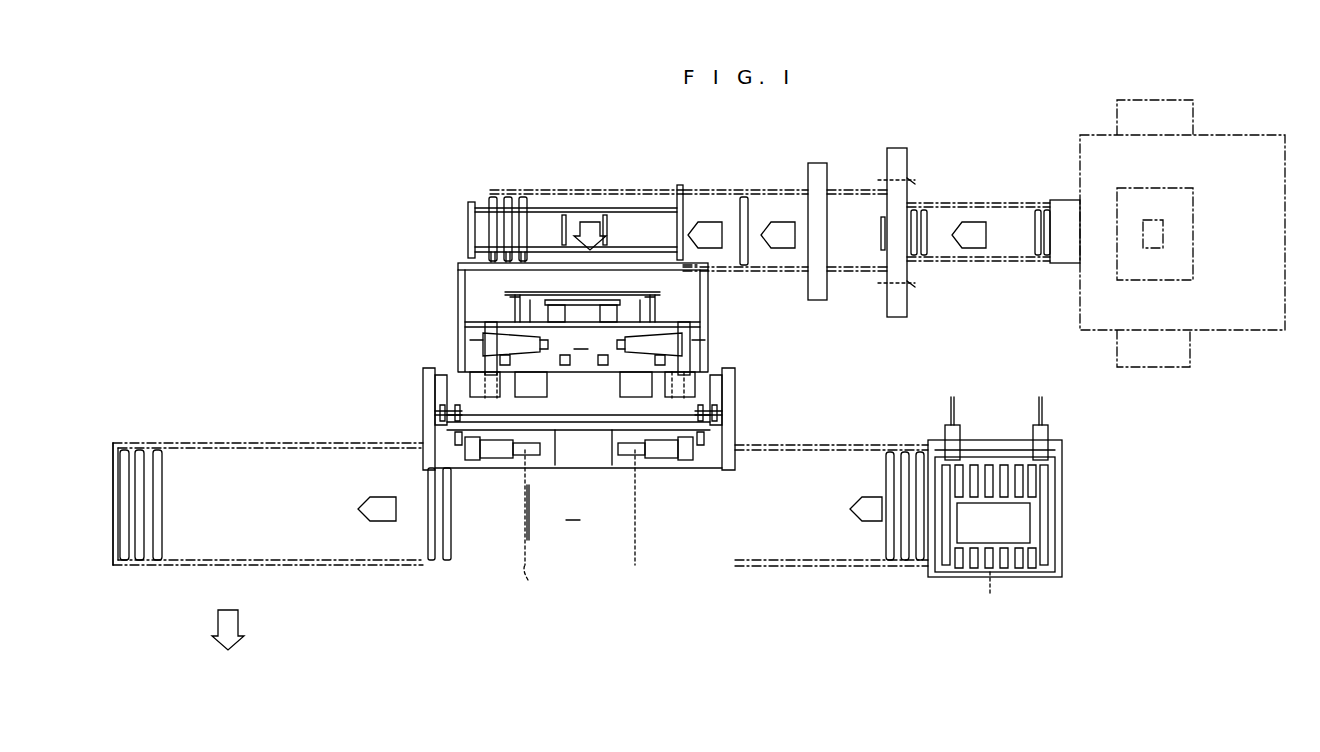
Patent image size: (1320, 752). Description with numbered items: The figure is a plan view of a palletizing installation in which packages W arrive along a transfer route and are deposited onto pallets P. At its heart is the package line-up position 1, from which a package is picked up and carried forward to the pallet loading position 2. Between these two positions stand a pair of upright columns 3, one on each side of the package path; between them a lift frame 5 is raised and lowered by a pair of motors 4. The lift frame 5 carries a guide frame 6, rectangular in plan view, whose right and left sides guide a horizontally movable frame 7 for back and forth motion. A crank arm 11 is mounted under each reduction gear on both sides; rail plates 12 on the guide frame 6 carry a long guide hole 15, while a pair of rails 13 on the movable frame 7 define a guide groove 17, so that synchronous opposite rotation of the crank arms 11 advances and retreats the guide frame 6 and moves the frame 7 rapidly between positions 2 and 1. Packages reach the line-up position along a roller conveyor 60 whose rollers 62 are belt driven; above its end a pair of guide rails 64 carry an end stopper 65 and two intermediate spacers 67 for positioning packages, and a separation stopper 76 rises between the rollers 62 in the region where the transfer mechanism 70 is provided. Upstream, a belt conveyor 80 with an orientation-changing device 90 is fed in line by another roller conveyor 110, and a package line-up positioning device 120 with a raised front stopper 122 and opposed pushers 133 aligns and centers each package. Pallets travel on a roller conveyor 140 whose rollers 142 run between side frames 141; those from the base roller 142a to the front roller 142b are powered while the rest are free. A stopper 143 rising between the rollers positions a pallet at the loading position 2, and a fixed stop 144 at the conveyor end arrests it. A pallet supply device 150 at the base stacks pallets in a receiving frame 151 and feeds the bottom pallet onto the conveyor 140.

The package line-up position 1 is at (583, 329).
The pallet loading position 2 is at (575, 430).
The upright columns 3 is at (436, 397).
The motors 4 is at (503, 455).
The lift frame 5 is at (458, 372).
The guide frame 6 is at (458, 265).
The horizontally movable frame 7 is at (470, 323).
The crank arm 11 is at (482, 355).
The rail plates 12 is at (497, 335).
The rails 13 is at (515, 305).
The long guide hole 15 is at (520, 350).
The guide groove 17 is at (556, 308).
The roller conveyor 60 is at (664, 184).
The rollers 62 is at (493, 205).
The guide rails 64 is at (475, 250).
The end stopper 65 is at (520, 222).
The intermediate spacers 67 is at (565, 225).
The transfer mechanism 70 is at (594, 210).
The separation stopper 76 is at (682, 225).
The belt conveyor 80 is at (777, 182).
The device to change the orientation of packages 90 is at (820, 158).
The roller conveyor 110 is at (1005, 196).
The package line-up positioning device 120 is at (902, 143).
The front stopper 122 is at (882, 230).
The pushers 133 is at (910, 181).
The roller conveyor 140 is at (514, 527).
The side frames 141 is at (857, 446).
The rollers 142 is at (162, 460).
The roller at the base 142a is at (1048, 556).
The front roller 142b is at (450, 540).
The stopper 143 is at (522, 505).
The fixed stop 144 is at (113, 460).
The pallet supply device 150 is at (1039, 508).
The receiving frame 151 is at (1062, 500).